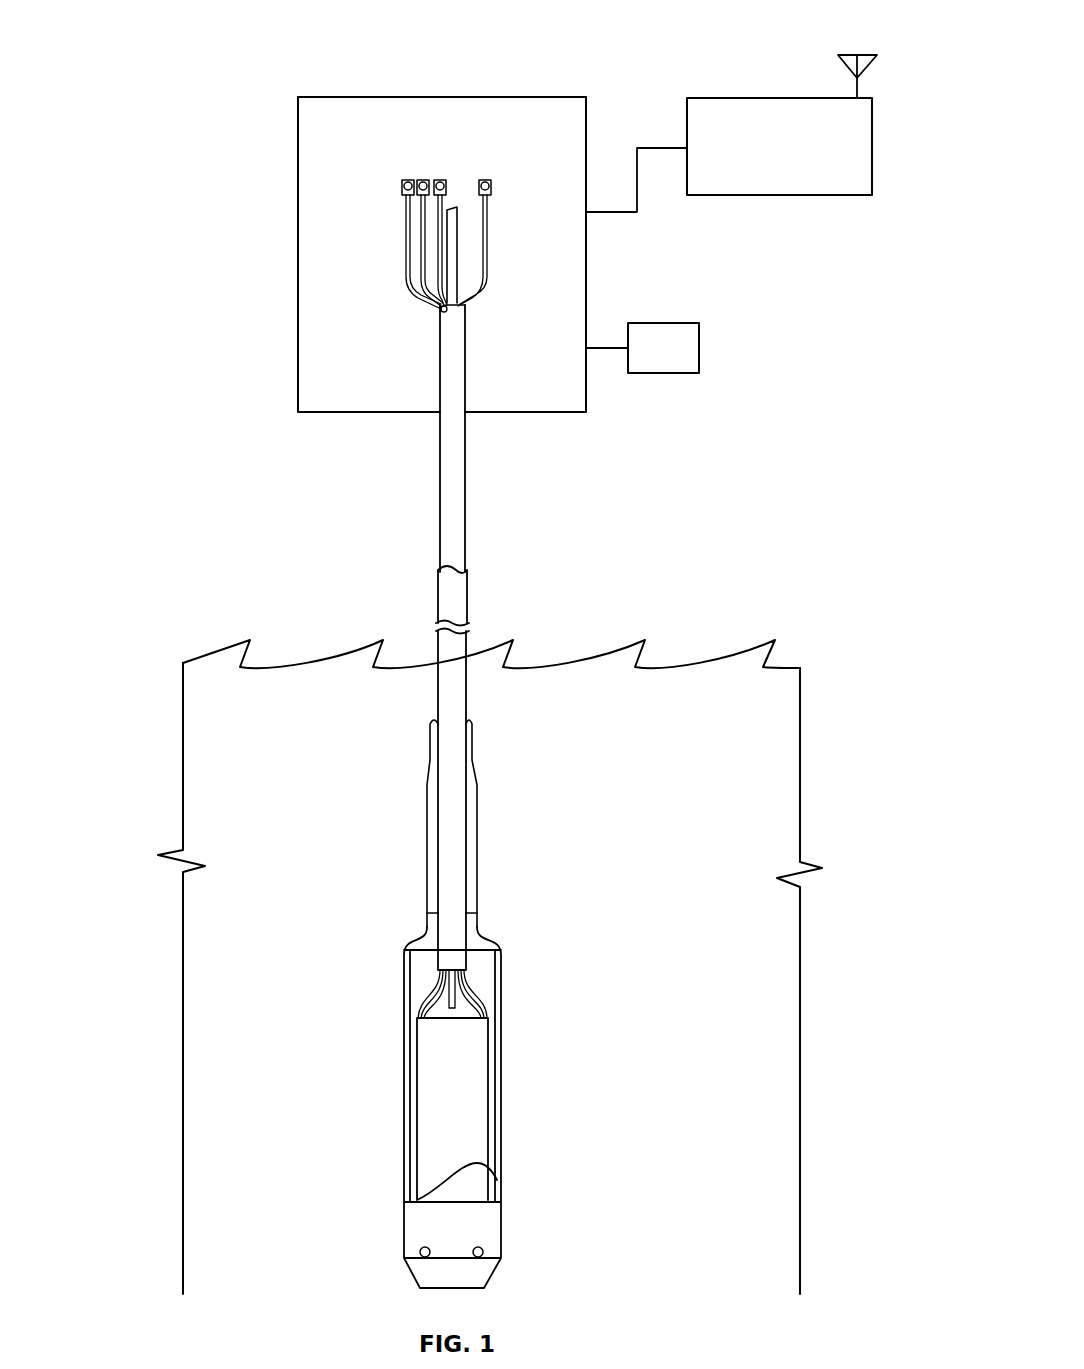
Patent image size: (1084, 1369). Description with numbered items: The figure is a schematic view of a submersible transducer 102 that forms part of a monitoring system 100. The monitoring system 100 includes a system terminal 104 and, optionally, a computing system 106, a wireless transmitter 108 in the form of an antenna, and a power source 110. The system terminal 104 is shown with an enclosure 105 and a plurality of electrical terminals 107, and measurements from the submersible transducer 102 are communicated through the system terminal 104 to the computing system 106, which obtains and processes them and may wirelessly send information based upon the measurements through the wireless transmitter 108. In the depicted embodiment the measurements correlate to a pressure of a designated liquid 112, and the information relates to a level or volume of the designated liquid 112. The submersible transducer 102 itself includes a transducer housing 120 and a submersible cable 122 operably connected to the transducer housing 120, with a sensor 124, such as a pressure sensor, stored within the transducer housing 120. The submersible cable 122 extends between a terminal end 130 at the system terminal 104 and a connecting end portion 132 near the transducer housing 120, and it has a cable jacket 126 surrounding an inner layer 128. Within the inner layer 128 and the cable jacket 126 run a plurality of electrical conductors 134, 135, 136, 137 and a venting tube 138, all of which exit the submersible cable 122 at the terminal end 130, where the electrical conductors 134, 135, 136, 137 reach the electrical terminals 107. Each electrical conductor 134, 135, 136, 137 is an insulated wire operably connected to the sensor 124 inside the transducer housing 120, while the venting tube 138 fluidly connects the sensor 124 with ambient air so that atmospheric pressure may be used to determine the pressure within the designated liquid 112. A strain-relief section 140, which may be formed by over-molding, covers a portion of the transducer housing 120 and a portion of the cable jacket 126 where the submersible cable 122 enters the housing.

The monitoring system 100 is at (150, 22).
The submersible transducer 102 is at (122, 1287).
The system terminal 104 is at (347, 97).
The enclosure 105 is at (528, 112).
The computing system 106 is at (727, 98).
The electrical terminals 107 is at (400, 185).
The wireless transmitter 108 is at (885, 53).
The power source 110 is at (662, 323).
The designated liquid 112 is at (697, 837).
The transducer housing 120 is at (502, 1047).
The submersible cable 122 is at (468, 688).
The sensor 124 is at (465, 1118).
The cable jacket 126 is at (452, 598).
The inner layer 128 is at (450, 520).
The terminal end 130 is at (435, 313).
The connecting end portion 132 is at (440, 898).
The electrical conductor 134 is at (403, 257).
The electrical conductor 135 is at (418, 240).
The electrical conductor 136 is at (438, 225).
The electrical conductor 137 is at (485, 263).
The venting tube 138 is at (457, 213).
The strain-relief section 140 is at (385, 858).